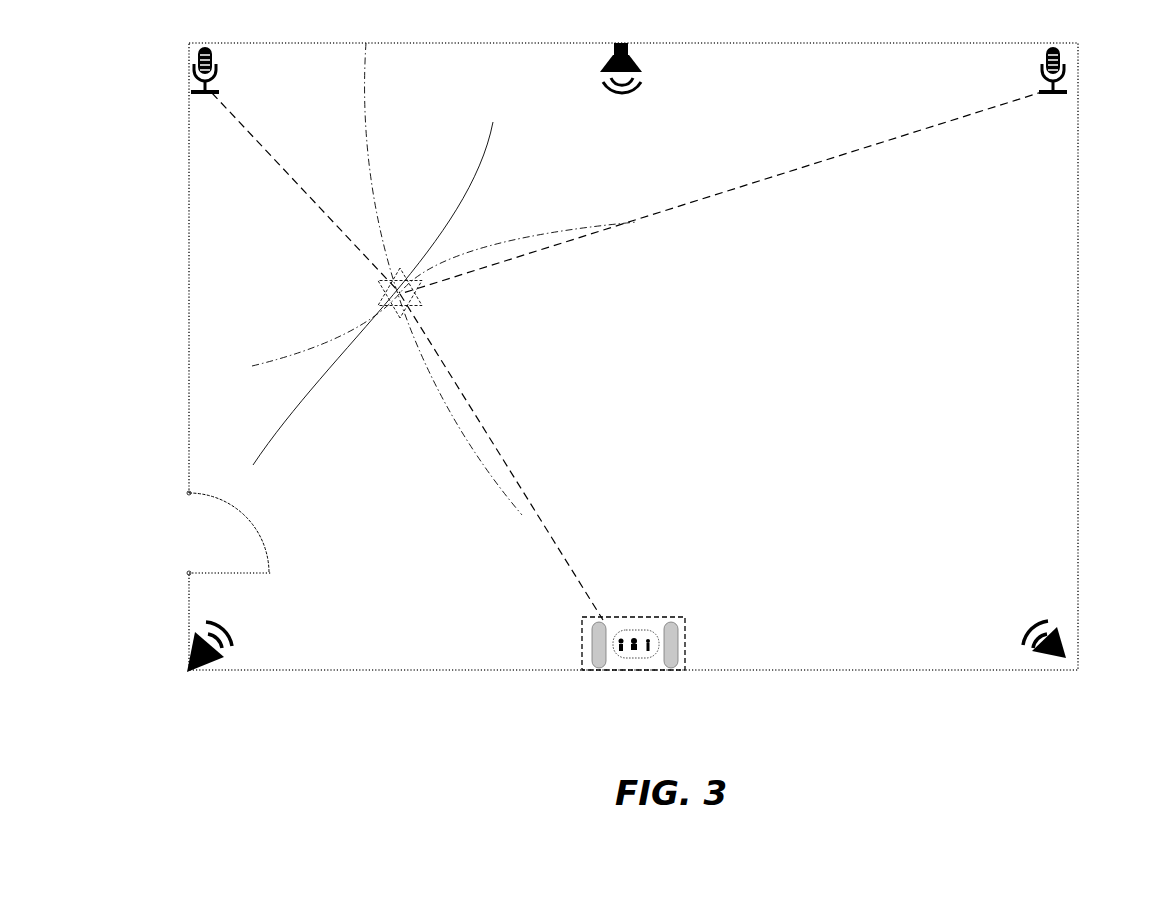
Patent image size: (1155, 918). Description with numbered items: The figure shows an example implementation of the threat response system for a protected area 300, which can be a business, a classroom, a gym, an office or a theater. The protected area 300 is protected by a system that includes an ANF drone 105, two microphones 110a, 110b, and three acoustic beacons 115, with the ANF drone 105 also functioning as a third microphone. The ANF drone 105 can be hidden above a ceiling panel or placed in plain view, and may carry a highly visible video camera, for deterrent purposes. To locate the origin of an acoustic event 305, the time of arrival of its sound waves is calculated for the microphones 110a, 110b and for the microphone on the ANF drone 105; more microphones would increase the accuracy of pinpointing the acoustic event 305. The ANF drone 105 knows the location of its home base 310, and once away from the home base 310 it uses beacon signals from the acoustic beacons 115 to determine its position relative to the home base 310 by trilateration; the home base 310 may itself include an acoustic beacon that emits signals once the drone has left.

The protected area 300 is at (189, 243).
The microphone 110a is at (209, 96).
The microphone 110b is at (1043, 93).
The acoustic beacon 115 is at (625, 95).
The acoustic event 305 is at (424, 293).
The home base 310 is at (685, 617).
The ANF drone 105 is at (590, 617).